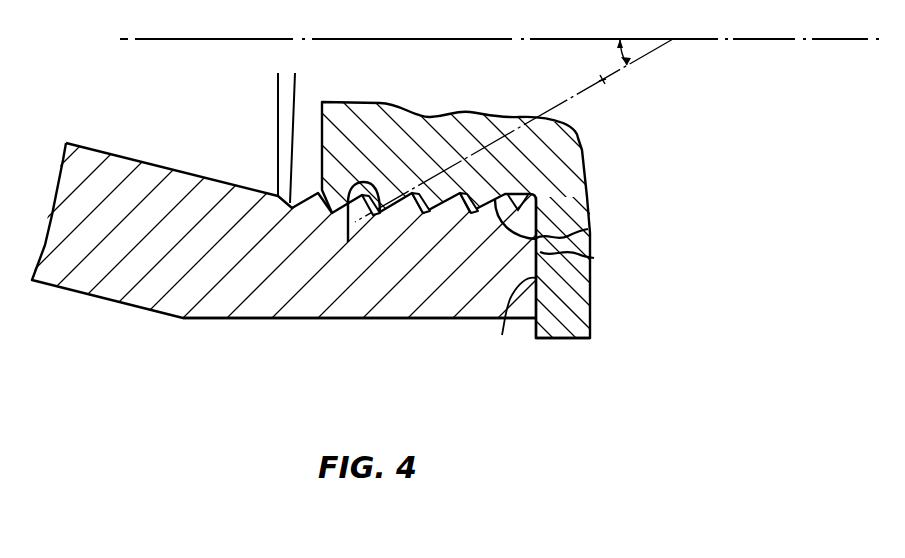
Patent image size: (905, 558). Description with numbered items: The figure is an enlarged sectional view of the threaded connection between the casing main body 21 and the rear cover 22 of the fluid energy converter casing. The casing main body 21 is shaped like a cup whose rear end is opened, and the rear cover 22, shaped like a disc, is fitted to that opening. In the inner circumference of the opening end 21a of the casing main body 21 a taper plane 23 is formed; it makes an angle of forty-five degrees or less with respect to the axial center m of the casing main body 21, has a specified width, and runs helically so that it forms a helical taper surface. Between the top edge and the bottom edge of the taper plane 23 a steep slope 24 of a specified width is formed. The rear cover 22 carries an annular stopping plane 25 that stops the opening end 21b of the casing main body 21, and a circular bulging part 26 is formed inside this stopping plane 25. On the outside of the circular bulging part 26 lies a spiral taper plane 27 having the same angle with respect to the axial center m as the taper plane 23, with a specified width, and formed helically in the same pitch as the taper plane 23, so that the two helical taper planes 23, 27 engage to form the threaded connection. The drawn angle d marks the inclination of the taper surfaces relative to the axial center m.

The casing main body 21 is at (119, 306).
The opening end 21a is at (398, 304).
The opening end 21b is at (594, 258).
The rear cover 22 is at (580, 345).
The taper plane 23 is at (307, 207).
The steep slope 24 is at (435, 208).
The annular stopping plane 25 is at (509, 319).
The circular bulging part 26 is at (423, 138).
The spiral taper plane 27 is at (588, 229).
The axial center m is at (700, 39).
The angle d is at (619, 54).